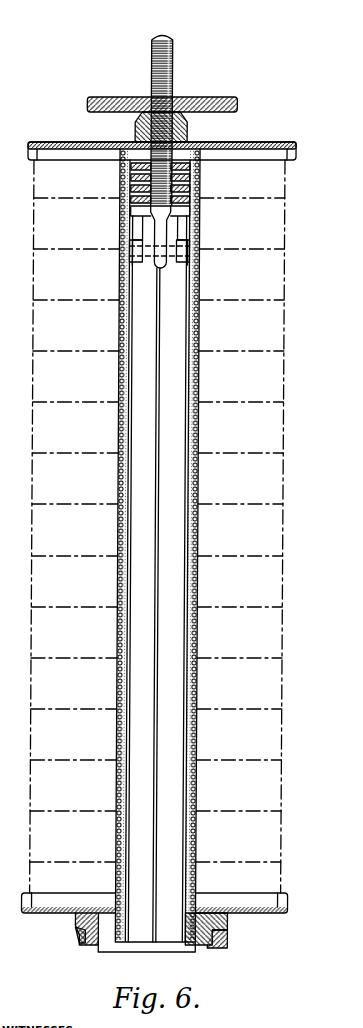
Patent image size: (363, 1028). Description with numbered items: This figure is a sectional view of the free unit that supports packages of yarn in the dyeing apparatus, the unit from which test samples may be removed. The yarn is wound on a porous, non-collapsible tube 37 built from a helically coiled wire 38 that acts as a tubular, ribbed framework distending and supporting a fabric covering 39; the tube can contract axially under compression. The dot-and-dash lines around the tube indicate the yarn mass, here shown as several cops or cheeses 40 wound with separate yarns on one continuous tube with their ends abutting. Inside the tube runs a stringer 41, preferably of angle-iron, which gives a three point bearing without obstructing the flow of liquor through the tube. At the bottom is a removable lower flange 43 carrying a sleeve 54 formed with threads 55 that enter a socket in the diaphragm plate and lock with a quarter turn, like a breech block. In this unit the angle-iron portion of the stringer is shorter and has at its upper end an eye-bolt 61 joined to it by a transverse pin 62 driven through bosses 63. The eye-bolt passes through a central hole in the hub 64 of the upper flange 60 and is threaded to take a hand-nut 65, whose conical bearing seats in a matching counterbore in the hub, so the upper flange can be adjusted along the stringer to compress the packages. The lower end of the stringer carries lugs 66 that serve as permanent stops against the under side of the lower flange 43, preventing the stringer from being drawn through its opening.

The tube 37 is at (200, 350).
The helically coiled wire 38 is at (203, 191).
The fabric covering 39 is at (203, 229).
The cops or cheeses 40 is at (279, 241).
The stringer 41 is at (173, 437).
The lower flange 43 is at (294, 907).
The sleeve 54 is at (236, 925).
The threads 55 is at (234, 943).
The upper flange 60 is at (291, 146).
The eye-bolt 61 is at (173, 45).
The transverse pin 62 is at (148, 252).
The bosses 63 is at (136, 258).
The hub 64 is at (188, 130).
The hand-nut 65 is at (237, 104).
The lugs 66 is at (121, 931).